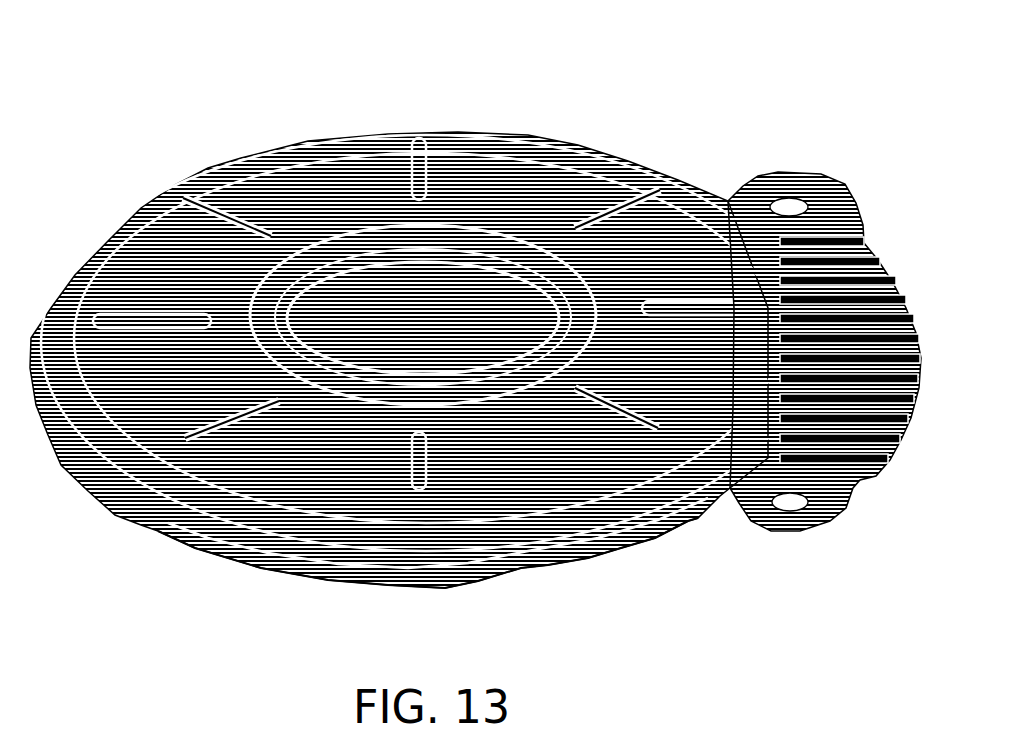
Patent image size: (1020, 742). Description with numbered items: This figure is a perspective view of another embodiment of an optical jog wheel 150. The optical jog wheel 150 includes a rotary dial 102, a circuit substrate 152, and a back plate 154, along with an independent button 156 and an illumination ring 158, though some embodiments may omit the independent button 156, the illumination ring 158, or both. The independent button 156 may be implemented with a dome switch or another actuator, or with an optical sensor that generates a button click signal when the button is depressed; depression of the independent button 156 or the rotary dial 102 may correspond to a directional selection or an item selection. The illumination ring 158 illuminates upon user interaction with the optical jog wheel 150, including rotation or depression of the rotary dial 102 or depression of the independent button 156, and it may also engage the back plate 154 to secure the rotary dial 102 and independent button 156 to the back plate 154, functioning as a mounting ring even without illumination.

The optical jog wheel 150 is at (198, 98).
The rotary dial 102 is at (598, 167).
The circuit substrate 152 is at (817, 210).
The back plate 154 is at (588, 550).
The independent button 156 is at (470, 277).
The illumination ring 158 is at (472, 230).